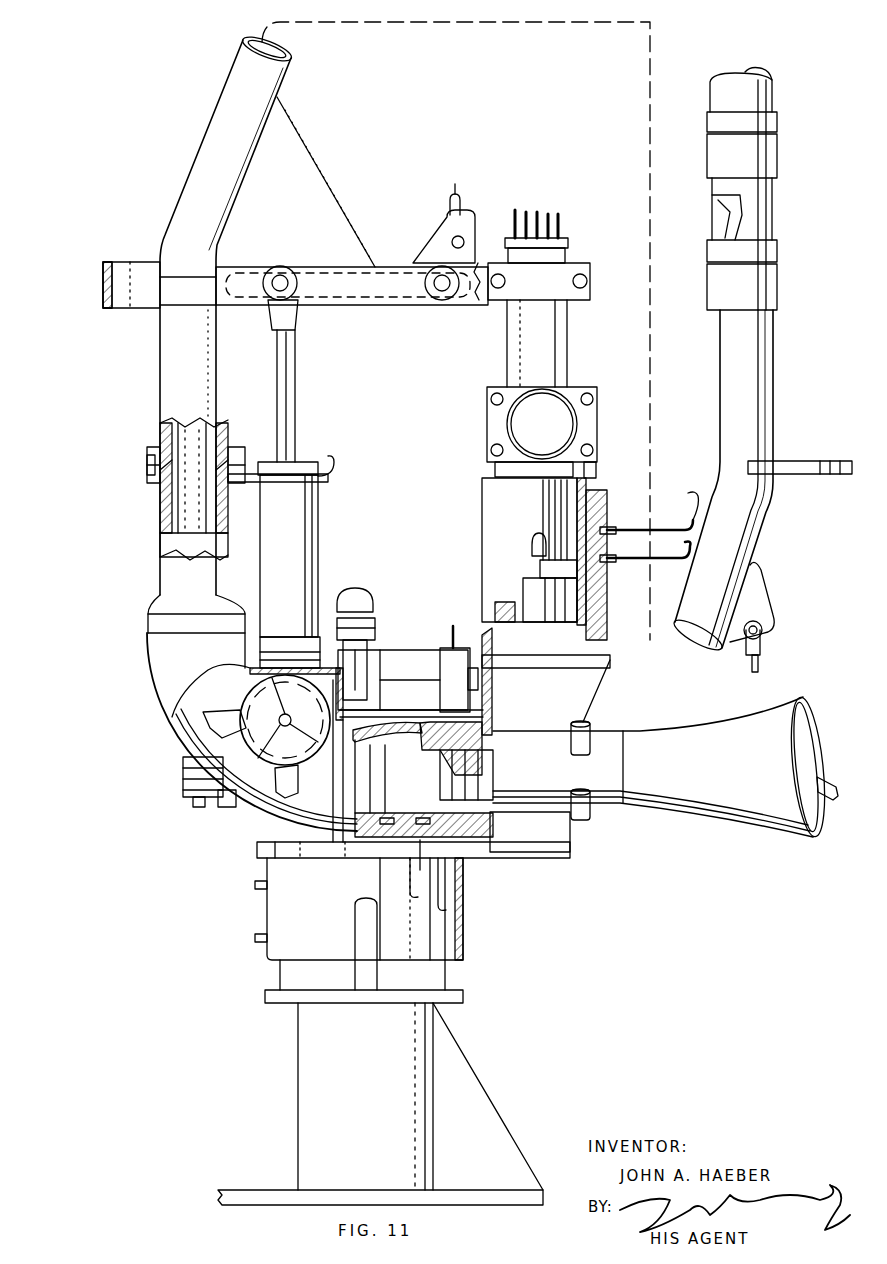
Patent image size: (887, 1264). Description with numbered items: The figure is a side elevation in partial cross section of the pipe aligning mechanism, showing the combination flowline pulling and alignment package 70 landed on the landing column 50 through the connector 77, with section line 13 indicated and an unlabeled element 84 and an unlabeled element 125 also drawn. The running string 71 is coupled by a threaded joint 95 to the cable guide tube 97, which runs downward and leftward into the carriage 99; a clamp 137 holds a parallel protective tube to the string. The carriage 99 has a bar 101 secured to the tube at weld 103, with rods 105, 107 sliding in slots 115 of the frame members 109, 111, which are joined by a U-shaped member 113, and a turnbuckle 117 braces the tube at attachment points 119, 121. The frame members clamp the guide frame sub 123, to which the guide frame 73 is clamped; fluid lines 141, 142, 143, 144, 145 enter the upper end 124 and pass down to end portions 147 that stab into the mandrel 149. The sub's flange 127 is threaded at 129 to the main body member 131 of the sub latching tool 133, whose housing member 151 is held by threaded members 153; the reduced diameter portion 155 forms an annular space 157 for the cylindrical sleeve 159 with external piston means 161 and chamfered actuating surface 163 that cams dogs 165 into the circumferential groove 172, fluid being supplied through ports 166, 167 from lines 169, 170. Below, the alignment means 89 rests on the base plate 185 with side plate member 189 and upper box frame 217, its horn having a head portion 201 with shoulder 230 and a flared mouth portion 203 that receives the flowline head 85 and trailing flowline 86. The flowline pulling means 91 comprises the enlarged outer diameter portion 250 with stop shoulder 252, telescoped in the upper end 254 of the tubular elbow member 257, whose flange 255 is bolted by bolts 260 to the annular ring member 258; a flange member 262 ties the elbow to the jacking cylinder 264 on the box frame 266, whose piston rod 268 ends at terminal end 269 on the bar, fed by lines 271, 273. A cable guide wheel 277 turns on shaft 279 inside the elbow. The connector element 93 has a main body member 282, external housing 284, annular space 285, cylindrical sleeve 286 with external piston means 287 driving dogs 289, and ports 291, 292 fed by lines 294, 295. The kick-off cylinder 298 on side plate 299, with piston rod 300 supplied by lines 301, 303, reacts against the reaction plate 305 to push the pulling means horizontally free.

The section line 13- 13 is at (90, 284).
The landing column 50 is at (380, 1104).
The combination flowline pulling and alignment package 70 is at (434, 192).
The running string 71 is at (776, 94).
The guide frame 73 is at (567, 420).
The connector 77 is at (364, 930).
The valve member 84 is at (492, 788).
The ocean-floor flowline head 85 is at (492, 750).
The flowline 86 is at (832, 784).
The alignment means 89 is at (724, 720).
The flowline pulling means 91 is at (152, 590).
The connector element 93 is at (413, 761).
The threaded joint 95 is at (776, 198).
The cable guide tube 97 is at (212, 135).
The carriage 99 is at (156, 258).
The bar 101 is at (368, 298).
The weld 103 is at (242, 274).
The rods 105 is at (292, 277).
The rods 107 is at (446, 304).
The main frame member 109 is at (388, 270).
The main frame member 111 is at (468, 307).
The U-shaped member 113 is at (108, 302).
The slots 115 is at (272, 277).
The turnbuckle 117 is at (452, 206).
The turnbuckle attachment point 119 is at (794, 578).
The turnbuckle attachment point 121 is at (464, 230).
The guide frame sub 123 is at (569, 324).
The upper end of guide frame sub 124 is at (568, 252).
The square flange 125 is at (596, 402).
The circumferential flange 127 is at (594, 472).
The threaded connection 129 is at (597, 464).
The main body member 131 is at (596, 482).
The sub latching tool 133 is at (480, 534).
The clamp 137 is at (796, 462).
The fluid line 141 is at (517, 207).
The fluid line 142 is at (528, 212).
The fluid line 143 is at (539, 214).
The fluid line 144 is at (550, 216).
The fluid line 145 is at (560, 218).
The end portions 147 is at (535, 565).
The mandrel 149 is at (546, 647).
The housing member 151 is at (606, 617).
The threaded members 153 is at (602, 498).
The reduced outer diameter portion 155 is at (602, 518).
The annular space 157 is at (602, 536).
The cylindrical sleeve 159 is at (602, 558).
The external piston means 161 is at (602, 570).
The chamfered actuating surface 163 is at (602, 632).
The dogs 165 is at (588, 647).
The fluid port 166 is at (642, 536).
The fluid port 167 is at (602, 592).
The fluid line 169 is at (698, 500).
The fluid line 170 is at (690, 562).
The circumferential groove 172 is at (564, 602).
The base plate 185 is at (570, 850).
The side plate member 189 is at (530, 832).
The head portion 201 is at (550, 742).
The flared mouth portion 203 is at (807, 702).
The upper box frame 217 is at (600, 680).
The shoulder 230 is at (480, 770).
The enlarged outer diameter portion 250 is at (164, 488).
The stop shoulder 252 is at (174, 470).
The upper end of elbow 254 is at (164, 542).
The flange 255 is at (148, 468).
The tubular elbow member 257 is at (152, 653).
The annular ring member 258 is at (167, 444).
The bolts 260 is at (150, 458).
The flange member 262 is at (326, 478).
The jacking cylinder 264 is at (320, 506).
The box frame 266 is at (250, 682).
The piston rod 268 is at (296, 366).
The terminal end of piston rod 269 is at (292, 308).
The fluid line 271 is at (332, 462).
The fluid line 273 is at (332, 617).
The cable guide wheel 277 is at (257, 740).
The shaft 279 is at (272, 758).
The main body member 282 is at (380, 792).
The external housing 284 is at (468, 840).
The annular space 285 is at (390, 817).
The cylindrical sleeve 286 is at (443, 842).
The external piston means 287 is at (422, 880).
The dogs 289 is at (483, 830).
The fluid port 291 is at (383, 842).
The fluid port 292 is at (428, 817).
The fluid line 294 is at (410, 888).
The fluid line 295 is at (440, 897).
The kick-off cylinder 298 is at (410, 682).
The side plate 299 is at (320, 696).
The piston rod 300 is at (482, 682).
The fluid line 301 is at (388, 665).
The fluid line 303 is at (454, 630).
The reaction plate 305 is at (488, 630).